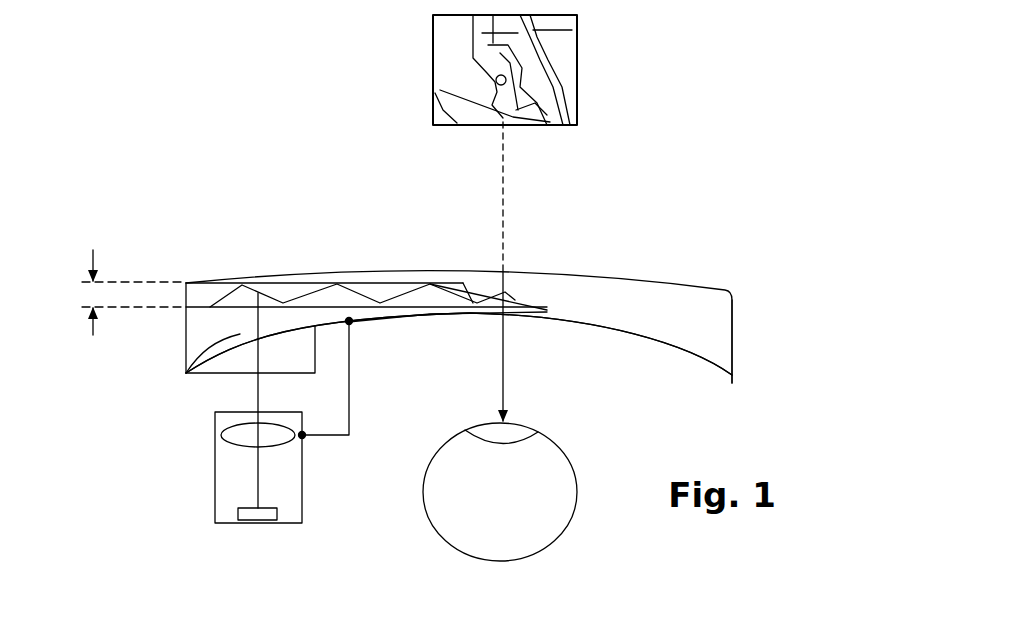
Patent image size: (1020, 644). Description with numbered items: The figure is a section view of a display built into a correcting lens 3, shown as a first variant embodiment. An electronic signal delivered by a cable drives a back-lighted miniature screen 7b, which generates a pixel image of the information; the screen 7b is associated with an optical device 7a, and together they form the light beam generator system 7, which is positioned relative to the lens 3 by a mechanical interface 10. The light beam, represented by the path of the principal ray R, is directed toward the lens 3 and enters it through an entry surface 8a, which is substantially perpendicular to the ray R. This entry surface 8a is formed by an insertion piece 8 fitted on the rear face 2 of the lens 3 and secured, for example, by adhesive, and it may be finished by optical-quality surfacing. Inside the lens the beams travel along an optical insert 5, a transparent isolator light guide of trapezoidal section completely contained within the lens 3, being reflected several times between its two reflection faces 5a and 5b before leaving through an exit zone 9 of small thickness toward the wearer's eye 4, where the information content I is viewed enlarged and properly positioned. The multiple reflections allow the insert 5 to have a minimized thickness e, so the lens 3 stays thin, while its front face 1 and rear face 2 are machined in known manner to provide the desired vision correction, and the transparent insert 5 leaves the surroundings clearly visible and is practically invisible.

The information content I is at (563, 77).
The front face 1 is at (668, 278).
The rear face 2 is at (705, 360).
The lens 3 is at (708, 316).
The wearer's eye 4 is at (567, 531).
The optical insert 5 is at (473, 286).
The reflection face 5a is at (376, 283).
The reflection face 5b is at (428, 315).
The light beam generator system 7 is at (212, 478).
The optical device 7a is at (237, 440).
The miniature screen 7b is at (238, 513).
The insertion piece 8 is at (212, 366).
The entry surface 8a is at (237, 376).
The exit zone 9 is at (513, 316).
The mechanical interface 10 is at (323, 438).
The principal ray R is at (258, 478).
The thickness e is at (127, 292).